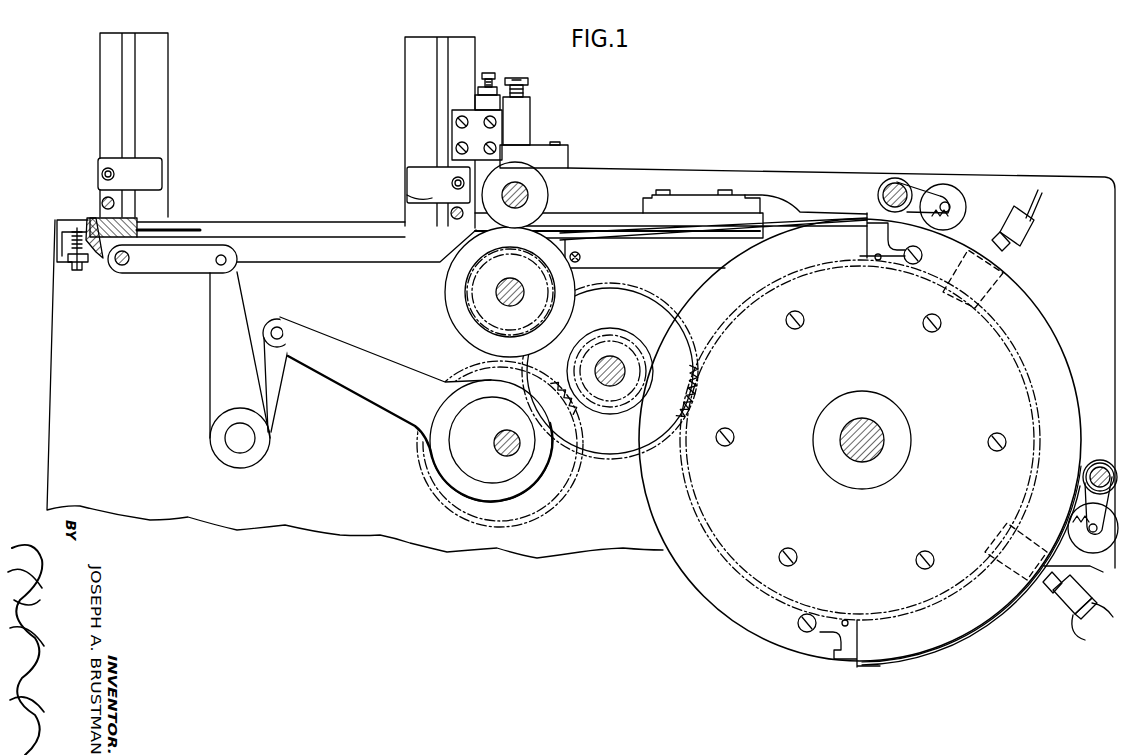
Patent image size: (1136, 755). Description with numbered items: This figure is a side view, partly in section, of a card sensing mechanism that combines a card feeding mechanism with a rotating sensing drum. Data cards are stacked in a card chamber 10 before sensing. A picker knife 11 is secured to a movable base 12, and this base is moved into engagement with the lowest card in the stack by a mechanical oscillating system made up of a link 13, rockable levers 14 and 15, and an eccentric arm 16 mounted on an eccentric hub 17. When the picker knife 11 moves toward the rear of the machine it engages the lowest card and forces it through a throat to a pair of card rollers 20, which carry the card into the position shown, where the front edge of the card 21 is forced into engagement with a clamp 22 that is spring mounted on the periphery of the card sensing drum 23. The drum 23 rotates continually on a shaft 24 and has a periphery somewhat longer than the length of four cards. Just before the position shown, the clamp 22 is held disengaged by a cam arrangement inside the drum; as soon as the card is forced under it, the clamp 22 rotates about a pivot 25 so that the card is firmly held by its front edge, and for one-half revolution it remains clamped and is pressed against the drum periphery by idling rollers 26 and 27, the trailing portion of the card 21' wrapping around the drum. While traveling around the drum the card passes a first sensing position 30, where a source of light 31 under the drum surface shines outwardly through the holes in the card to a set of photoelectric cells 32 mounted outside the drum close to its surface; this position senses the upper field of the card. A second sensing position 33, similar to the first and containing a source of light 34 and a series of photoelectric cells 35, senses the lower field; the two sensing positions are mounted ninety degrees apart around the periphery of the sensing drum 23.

The card chamber 10 is at (285, 144).
The picker knife 11 is at (90, 218).
The movable base 12 is at (101, 260).
The link 13 is at (167, 274).
The rockable lever 14 is at (237, 303).
The rockable lever 15 is at (278, 383).
The eccentric arm 16 is at (402, 378).
The eccentric hub 17 is at (468, 458).
The card rollers 20 is at (535, 197).
The card 21 is at (860, 420).
The card 21' is at (971, 575).
The clamp 22 is at (866, 215).
The card sensing drum 23 is at (957, 247).
The shaft 24 is at (880, 432).
The pivot 25 is at (924, 257).
The idling roller 26 is at (952, 190).
The idling roller 27 is at (1093, 547).
The sensing position 30 is at (1019, 261).
The source of light 31 is at (1000, 283).
The photoelectric cells 32 is at (1018, 225).
The sensing position 33 is at (1044, 595).
The source of light 34 is at (1025, 572).
The photoelectric cells 35 is at (1092, 625).